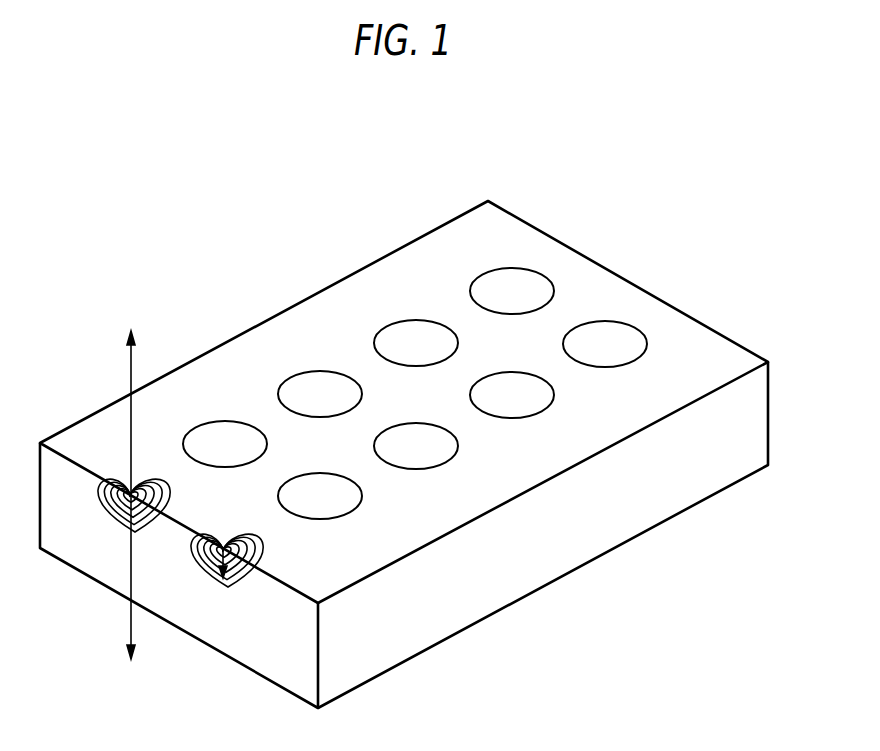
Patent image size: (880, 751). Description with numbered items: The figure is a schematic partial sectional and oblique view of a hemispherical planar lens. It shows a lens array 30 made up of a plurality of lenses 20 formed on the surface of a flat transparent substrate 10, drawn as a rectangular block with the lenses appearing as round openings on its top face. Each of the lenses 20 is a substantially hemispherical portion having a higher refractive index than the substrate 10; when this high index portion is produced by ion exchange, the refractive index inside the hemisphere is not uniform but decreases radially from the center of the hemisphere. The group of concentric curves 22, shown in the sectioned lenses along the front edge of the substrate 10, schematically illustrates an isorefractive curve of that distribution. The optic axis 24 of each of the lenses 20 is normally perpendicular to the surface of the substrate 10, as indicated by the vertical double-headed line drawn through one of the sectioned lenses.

The flat transparent substrate 10 is at (475, 598).
The lenses 20 is at (397, 337).
The concentric curves 22 is at (126, 498).
The optic axis 24 is at (130, 370).
The lens array 30 is at (643, 218).